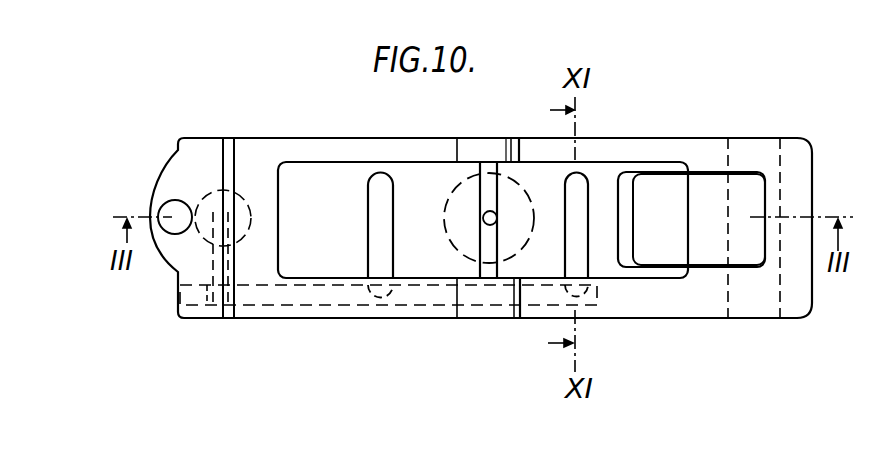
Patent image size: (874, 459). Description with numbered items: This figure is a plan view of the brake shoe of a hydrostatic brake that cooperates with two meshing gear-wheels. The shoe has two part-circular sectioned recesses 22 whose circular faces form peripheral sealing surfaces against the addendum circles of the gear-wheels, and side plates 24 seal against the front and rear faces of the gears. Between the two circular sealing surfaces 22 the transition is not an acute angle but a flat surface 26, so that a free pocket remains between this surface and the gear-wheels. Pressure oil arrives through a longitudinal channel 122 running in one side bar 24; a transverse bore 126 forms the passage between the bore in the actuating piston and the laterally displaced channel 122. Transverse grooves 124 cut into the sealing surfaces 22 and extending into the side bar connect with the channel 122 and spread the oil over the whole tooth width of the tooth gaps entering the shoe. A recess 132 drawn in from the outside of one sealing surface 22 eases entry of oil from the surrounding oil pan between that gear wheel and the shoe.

The part-circular sectioned recess 22 is at (345, 253).
The side plate 24 is at (375, 148).
The flat surface 26 is at (487, 268).
The longitudinal channel 122 is at (285, 293).
The transverse groove 124 is at (373, 200).
The transverse bore 126 is at (213, 266).
The recess 132 is at (713, 239).